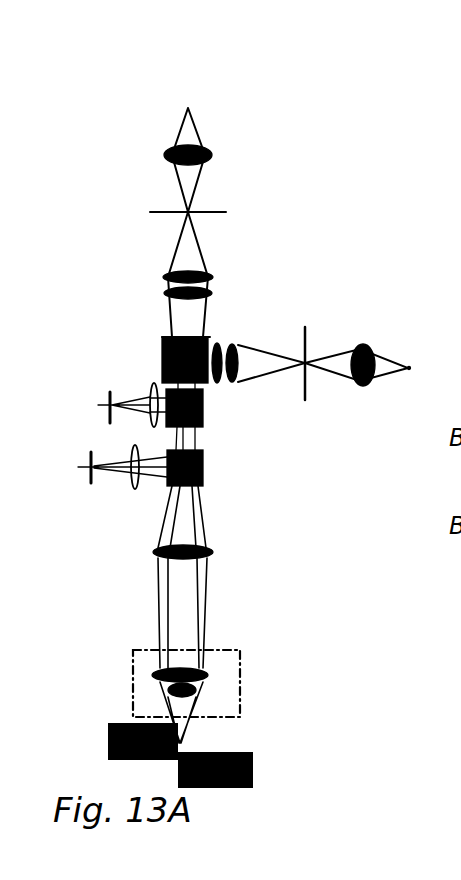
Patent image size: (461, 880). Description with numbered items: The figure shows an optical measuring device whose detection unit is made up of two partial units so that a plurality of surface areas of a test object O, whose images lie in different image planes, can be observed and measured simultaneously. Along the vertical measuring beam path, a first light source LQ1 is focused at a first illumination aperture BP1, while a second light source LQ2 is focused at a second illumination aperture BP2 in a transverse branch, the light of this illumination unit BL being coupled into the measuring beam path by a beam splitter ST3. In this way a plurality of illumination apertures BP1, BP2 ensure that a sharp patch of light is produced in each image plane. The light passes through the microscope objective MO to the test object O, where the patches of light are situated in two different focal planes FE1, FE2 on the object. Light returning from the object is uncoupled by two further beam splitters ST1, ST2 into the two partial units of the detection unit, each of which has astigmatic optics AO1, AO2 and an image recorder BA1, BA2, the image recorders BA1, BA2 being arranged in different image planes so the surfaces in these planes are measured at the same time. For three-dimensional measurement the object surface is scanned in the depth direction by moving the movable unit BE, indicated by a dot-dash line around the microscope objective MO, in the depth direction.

The light source LQ1 is at (201, 143).
The illumination aperture BP1 is at (228, 214).
The illumination unit BL is at (266, 274).
The beam splitter ST3 is at (153, 344).
The illumination aperture BP2 is at (307, 334).
The light source LQ2 is at (411, 371).
The beam splitter ST1 is at (217, 416).
The astigmatic optics AO1 is at (151, 391).
The image recorder BA1 is at (101, 399).
The beam splitter ST2 is at (210, 476).
The astigmatic optics AO2 is at (122, 488).
The image recorder BA2 is at (86, 459).
The movable unit BE is at (233, 641).
The microscope objective MO is at (150, 688).
The focal plane FE2 is at (140, 720).
The focal plane FE1 is at (187, 747).
The test object O is at (267, 769).